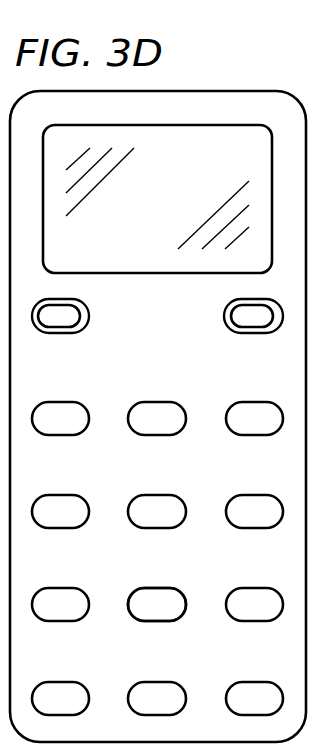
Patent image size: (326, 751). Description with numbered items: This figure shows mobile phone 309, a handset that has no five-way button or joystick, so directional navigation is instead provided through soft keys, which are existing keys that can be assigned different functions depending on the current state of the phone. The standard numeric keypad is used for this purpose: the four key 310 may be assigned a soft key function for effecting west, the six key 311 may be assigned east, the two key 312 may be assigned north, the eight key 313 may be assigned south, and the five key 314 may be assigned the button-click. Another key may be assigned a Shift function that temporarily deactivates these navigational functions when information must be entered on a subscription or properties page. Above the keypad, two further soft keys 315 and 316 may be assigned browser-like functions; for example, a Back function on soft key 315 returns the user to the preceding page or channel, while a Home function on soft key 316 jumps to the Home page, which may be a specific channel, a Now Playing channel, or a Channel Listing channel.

The mobile phone 309 is at (245, 73).
The 4-key 310 is at (62, 529).
The 6-key 311 is at (254, 529).
The 2-key 312 is at (157, 436).
The 8-key 313 is at (157, 623).
The 5-key 314 is at (157, 529).
The soft key 315 is at (62, 335).
The soft key 316 is at (254, 335).